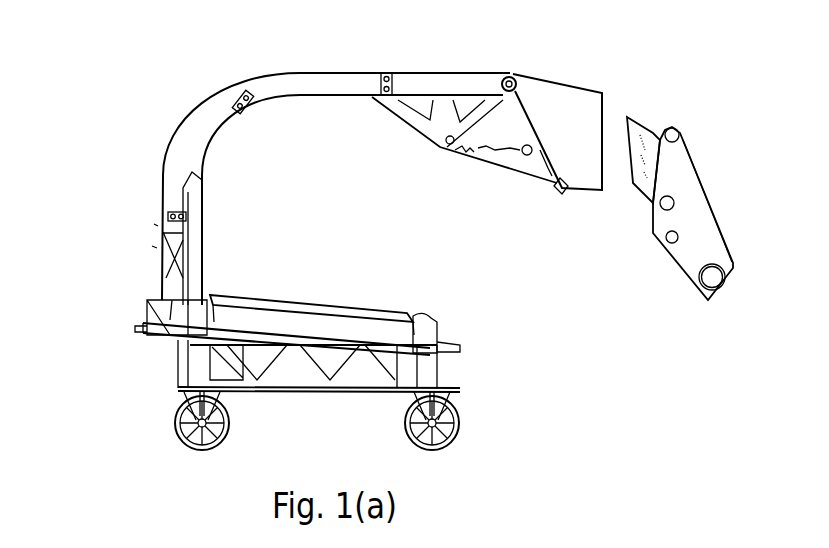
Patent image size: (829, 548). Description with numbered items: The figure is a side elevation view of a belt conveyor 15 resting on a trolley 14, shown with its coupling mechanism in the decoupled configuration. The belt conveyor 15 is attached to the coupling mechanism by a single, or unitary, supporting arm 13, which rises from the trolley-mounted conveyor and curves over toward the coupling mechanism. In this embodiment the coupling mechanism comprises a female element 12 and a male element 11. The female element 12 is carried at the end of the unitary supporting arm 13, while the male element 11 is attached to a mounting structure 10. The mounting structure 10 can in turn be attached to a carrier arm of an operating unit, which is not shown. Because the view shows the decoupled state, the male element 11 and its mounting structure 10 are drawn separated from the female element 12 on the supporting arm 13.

The mounting structure 10 is at (700, 173).
The male element 11 is at (628, 117).
The female element 12 is at (567, 112).
The unitary supporting arm 13 is at (202, 130).
The trolley 14 is at (177, 360).
The belt conveyor 15 is at (337, 307).